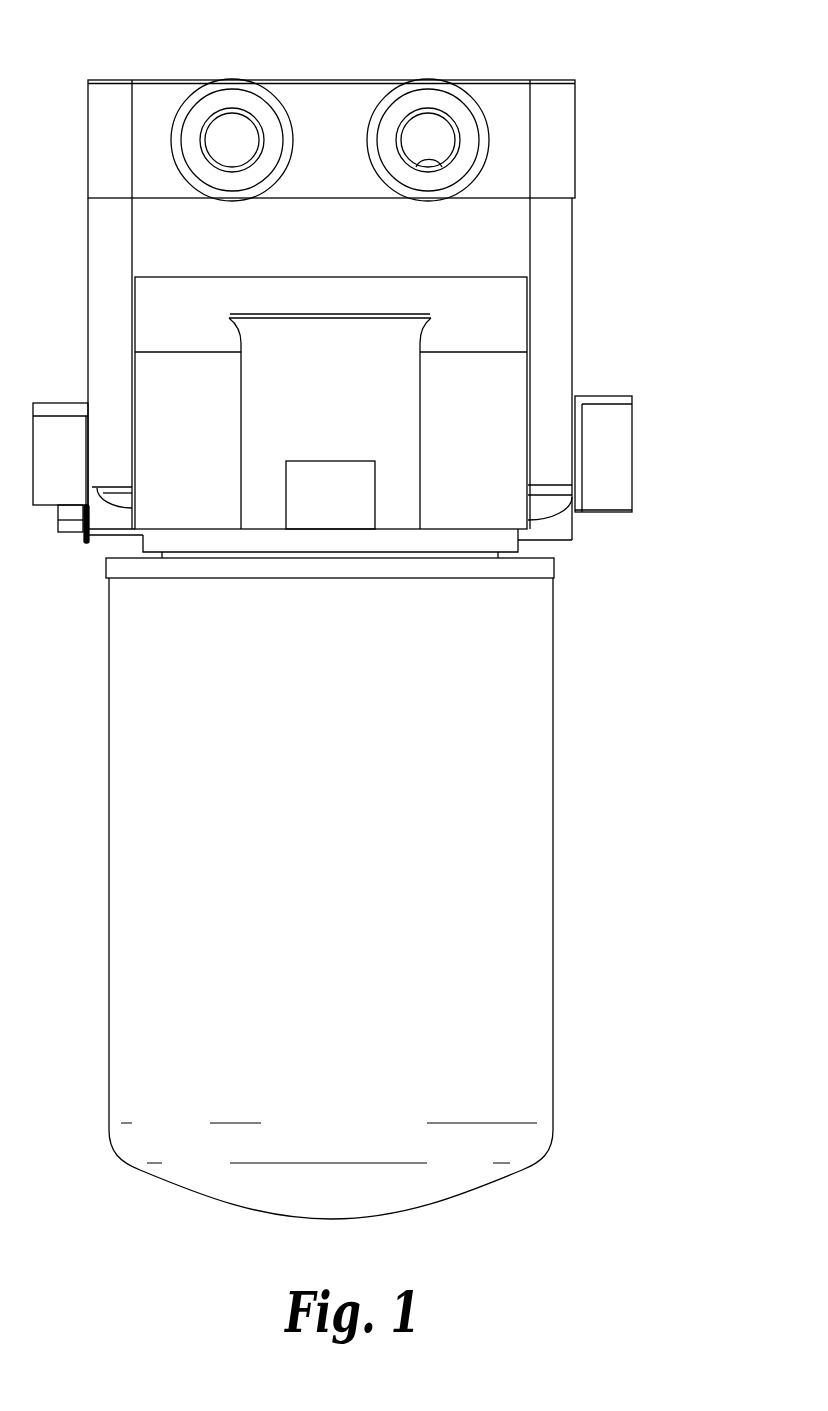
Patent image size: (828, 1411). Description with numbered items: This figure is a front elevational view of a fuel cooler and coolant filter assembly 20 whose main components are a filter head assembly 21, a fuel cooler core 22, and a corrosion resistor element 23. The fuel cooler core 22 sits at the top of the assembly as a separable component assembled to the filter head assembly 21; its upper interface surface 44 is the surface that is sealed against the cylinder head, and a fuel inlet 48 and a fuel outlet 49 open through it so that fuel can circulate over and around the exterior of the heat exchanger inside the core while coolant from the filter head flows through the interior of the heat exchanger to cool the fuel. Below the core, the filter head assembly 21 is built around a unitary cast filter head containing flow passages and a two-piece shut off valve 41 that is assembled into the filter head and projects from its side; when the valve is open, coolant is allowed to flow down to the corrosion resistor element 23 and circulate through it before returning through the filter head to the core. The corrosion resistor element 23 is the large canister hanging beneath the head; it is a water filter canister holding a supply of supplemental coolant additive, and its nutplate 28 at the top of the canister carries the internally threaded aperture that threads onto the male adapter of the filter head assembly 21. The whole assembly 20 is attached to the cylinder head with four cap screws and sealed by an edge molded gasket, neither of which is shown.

The fuel cooler and coolant filter assembly 20 is at (680, 148).
The filter head assembly 21 is at (572, 338).
The fuel cooler core 22 is at (575, 177).
The corrosion resistor element 23 is at (515, 701).
The nutplate 28 is at (578, 568).
The shut off valve 41 is at (610, 388).
The interface surface 44 is at (170, 82).
The fuel inlet 48 is at (232, 110).
The fuel outlet 49 is at (392, 133).